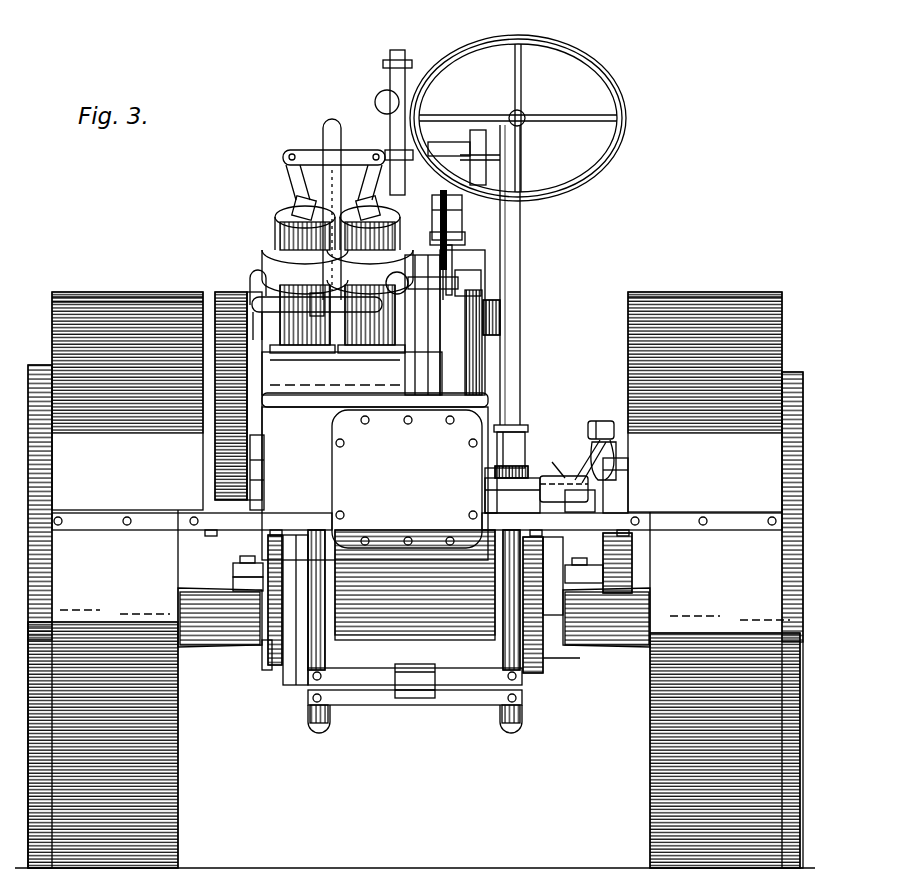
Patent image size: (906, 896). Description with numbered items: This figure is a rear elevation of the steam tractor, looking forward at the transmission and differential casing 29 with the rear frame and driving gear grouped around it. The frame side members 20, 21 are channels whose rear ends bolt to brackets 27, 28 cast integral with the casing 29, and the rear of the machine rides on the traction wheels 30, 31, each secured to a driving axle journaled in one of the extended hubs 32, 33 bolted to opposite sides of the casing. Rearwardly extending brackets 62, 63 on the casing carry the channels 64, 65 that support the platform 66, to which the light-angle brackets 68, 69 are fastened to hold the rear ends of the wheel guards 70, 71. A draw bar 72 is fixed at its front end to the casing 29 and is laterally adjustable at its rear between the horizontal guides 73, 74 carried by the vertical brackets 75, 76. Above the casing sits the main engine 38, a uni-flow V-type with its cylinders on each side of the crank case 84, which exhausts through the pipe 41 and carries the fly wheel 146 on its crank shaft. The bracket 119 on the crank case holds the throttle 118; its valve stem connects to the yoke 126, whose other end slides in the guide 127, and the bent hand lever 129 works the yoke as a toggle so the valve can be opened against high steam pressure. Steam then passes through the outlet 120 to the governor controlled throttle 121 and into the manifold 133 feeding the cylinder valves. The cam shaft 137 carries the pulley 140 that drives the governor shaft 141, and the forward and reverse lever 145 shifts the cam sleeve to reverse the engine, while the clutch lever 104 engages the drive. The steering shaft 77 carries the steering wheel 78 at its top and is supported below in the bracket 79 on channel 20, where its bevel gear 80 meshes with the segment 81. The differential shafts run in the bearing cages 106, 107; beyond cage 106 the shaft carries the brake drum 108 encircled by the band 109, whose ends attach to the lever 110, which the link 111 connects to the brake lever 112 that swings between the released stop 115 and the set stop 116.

The throttle 118 is at (410, 200).
The steering wheel 78 is at (601, 70).
The governor controlled throttle 121 is at (448, 198).
The governor shaft 141 is at (493, 153).
The guide 127 is at (486, 180).
The yoke 126 is at (478, 206).
The bracket 119 is at (465, 240).
The steering shaft 77 is at (522, 240).
The hand lever 129 is at (452, 255).
The forward and reverse lever 145 is at (481, 280).
The pulley 140 is at (500, 316).
The stop 116 is at (604, 420).
The brake lever 112 is at (598, 420).
The stop 115 is at (557, 462).
The bearing cage 106 is at (565, 478).
The brake drum 108 is at (578, 478).
The manifold 133 is at (345, 138).
The outlet 120 is at (330, 178).
The main engine 38 is at (278, 234).
The exhaust pipe 41 is at (253, 275).
The fly wheel 146 is at (224, 297).
The crank case 84 is at (183, 294).
The guard 71 is at (74, 296).
The guard 70 is at (757, 300).
The cam shaft 137 is at (495, 335).
The bracket 79 is at (500, 442).
The clutch lever 104 is at (494, 465).
The bevel gear 80 is at (497, 478).
The segment 81 is at (520, 474).
The platform 66 is at (360, 528).
The bracket 69 is at (92, 514).
The bearing cage 107 is at (266, 492).
The link 111 is at (614, 441).
The lever 110 is at (628, 463).
The band 109 is at (628, 493).
The bracket 68 is at (722, 523).
The bracket 27 is at (600, 570).
The side member 20 is at (633, 584).
The extended hub 32 is at (650, 618).
The bracket 28 is at (233, 568).
The side member 21 is at (234, 582).
The channel 65 is at (295, 550).
The transmission and differential casing 29 is at (395, 628).
The extended hub 33 is at (192, 648).
The bracket 63 is at (262, 642).
The vertical bracket 76 is at (290, 678).
The horizontal guide 74 is at (356, 686).
The horizontal guide 73 is at (376, 706).
The draw bar 72 is at (422, 694).
The vertical bracket 75 is at (516, 660).
The channel 64 is at (567, 594).
The bracket 62 is at (548, 580).
The traction wheel 31 is at (178, 793).
The traction wheel 30 is at (652, 762).